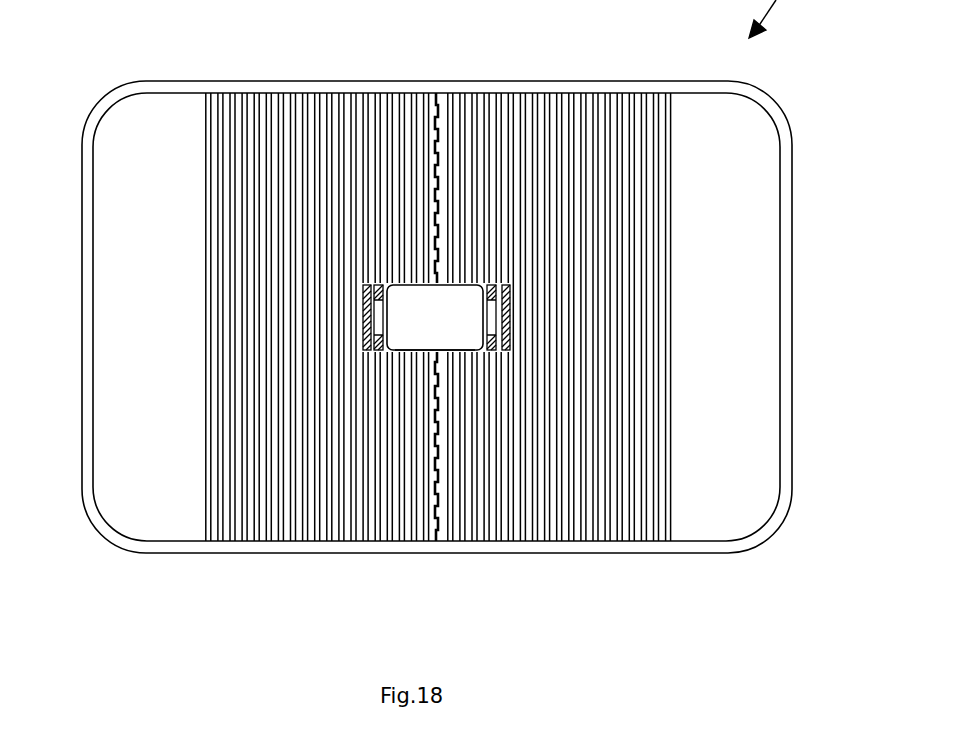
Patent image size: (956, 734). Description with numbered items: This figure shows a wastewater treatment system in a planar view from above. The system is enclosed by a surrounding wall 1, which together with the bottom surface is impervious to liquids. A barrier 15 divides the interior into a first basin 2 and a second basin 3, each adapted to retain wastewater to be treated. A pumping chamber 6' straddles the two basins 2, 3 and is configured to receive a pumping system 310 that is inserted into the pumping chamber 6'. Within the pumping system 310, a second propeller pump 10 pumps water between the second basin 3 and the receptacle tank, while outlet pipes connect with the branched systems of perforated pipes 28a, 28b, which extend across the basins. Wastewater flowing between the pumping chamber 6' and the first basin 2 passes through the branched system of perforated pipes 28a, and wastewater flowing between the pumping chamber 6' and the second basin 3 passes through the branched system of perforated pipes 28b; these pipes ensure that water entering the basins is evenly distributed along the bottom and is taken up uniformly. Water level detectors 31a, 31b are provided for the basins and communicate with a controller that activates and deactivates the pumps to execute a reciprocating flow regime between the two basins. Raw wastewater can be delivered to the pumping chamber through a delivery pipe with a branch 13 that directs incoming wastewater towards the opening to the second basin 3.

The surrounding wall 1 is at (756, 95).
The first basin 2 is at (680, 510).
The second basin 3 is at (177, 507).
The second propeller pump 10 is at (363, 317).
The branch 13 is at (408, 350).
The barrier 15 is at (436, 157).
The branched system of perforated pipes 28a is at (640, 533).
The branched system of perforated pipes 28b is at (230, 533).
The water level detector 31a is at (507, 285).
The water level detector 31b is at (360, 287).
The pumping system 310 is at (412, 285).
The pumping chamber 6' is at (474, 197).